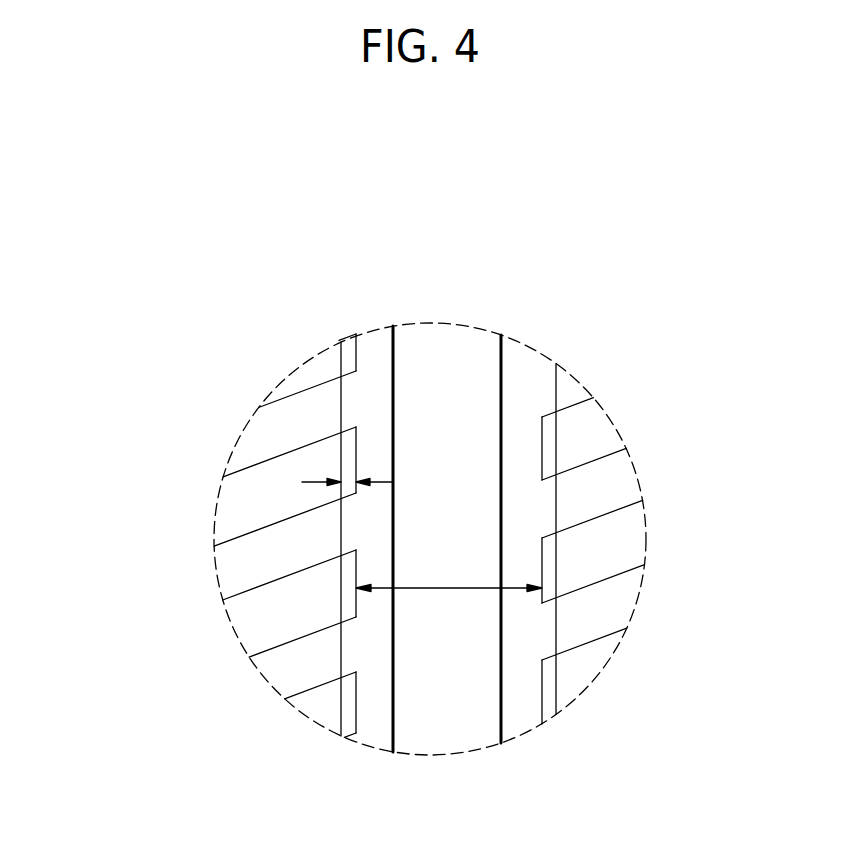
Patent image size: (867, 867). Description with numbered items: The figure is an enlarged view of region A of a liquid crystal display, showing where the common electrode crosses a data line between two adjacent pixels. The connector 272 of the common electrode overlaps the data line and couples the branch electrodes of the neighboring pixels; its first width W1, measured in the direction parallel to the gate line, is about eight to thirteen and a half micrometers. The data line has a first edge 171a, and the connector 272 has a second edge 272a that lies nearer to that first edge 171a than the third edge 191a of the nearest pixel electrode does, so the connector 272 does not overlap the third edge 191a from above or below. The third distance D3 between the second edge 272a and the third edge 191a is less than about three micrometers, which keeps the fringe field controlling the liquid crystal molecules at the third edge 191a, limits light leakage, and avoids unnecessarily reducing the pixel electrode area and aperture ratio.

The enlarged region A is at (296, 369).
The first edge of the data line 171a is at (501, 441).
The third edge of the pixel electrode 191a is at (341, 642).
The connector 272 is at (542, 560).
The second edge of the connector 272a is at (547, 445).
The third distance D3 is at (347, 500).
The first width W1 is at (449, 604).